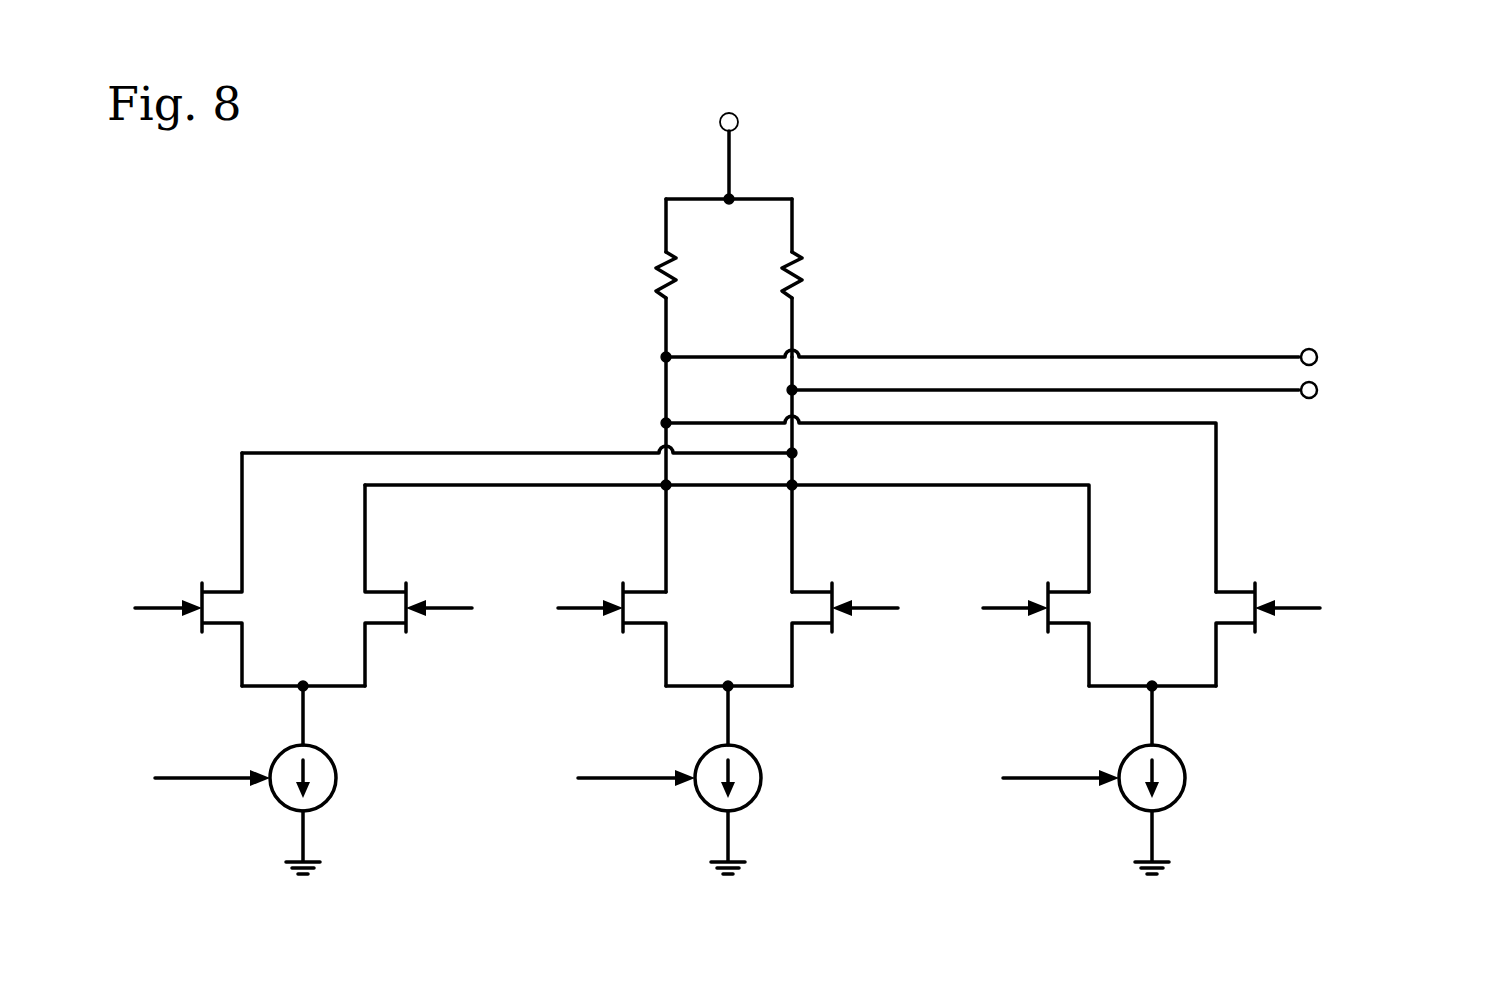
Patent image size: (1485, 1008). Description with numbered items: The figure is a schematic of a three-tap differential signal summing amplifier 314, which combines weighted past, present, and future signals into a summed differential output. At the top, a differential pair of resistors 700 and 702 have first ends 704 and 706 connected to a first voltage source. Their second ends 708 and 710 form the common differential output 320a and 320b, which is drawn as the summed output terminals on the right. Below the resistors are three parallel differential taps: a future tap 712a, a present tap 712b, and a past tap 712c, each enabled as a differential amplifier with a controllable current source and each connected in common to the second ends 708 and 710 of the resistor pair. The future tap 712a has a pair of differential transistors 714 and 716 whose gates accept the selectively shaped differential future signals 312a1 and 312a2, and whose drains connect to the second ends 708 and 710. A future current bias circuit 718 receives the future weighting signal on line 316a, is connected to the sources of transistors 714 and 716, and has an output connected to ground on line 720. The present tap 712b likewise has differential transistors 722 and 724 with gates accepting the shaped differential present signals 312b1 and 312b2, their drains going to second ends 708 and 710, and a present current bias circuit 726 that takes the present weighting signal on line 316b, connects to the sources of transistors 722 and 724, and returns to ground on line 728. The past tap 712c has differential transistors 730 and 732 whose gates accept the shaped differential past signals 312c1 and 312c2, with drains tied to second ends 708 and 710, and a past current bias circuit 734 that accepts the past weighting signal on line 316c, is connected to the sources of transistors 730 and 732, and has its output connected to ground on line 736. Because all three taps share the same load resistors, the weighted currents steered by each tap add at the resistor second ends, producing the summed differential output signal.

The summing amplifier 314 is at (1241, 226).
The resistor 700 is at (662, 272).
The resistor 702 is at (800, 276).
The first end 704 is at (655, 240).
The first end 706 is at (808, 246).
The second end 708 is at (655, 295).
The second end 710 is at (808, 306).
The differential output 320a is at (1265, 355).
The differential output 320b is at (1268, 392).
The future differential tap 712a is at (312, 518).
The present differential tap 712b is at (734, 518).
The past differential tap 712c is at (1154, 522).
The differential transistor 714 is at (240, 604).
The differential transistor 716 is at (362, 612).
The future current bias circuit 718 is at (337, 777).
The line 720 is at (301, 840).
The differential transistor 722 is at (662, 604).
The differential transistor 724 is at (788, 612).
The present current bias circuit 726 is at (762, 777).
The line 728 is at (726, 840).
The differential transistor 730 is at (1086, 604).
The differential transistor 732 is at (1212, 612).
The past current bias circuit 734 is at (1186, 777).
The line 736 is at (1150, 840).
The selectively shaped differential future signal 312a1 is at (182, 604).
The selectively shaped differential future signal 312a2 is at (425, 604).
The selectively shaped differential present signal 312b1 is at (604, 604).
The selectively shaped differential present signal 312b2 is at (851, 604).
The selectively shaped differential past signal 312c1 is at (1029, 604).
The selectively shaped differential past signal 312c2 is at (1274, 604).
The line 316a is at (235, 776).
The line 316b is at (660, 776).
The line 316c is at (1084, 776).